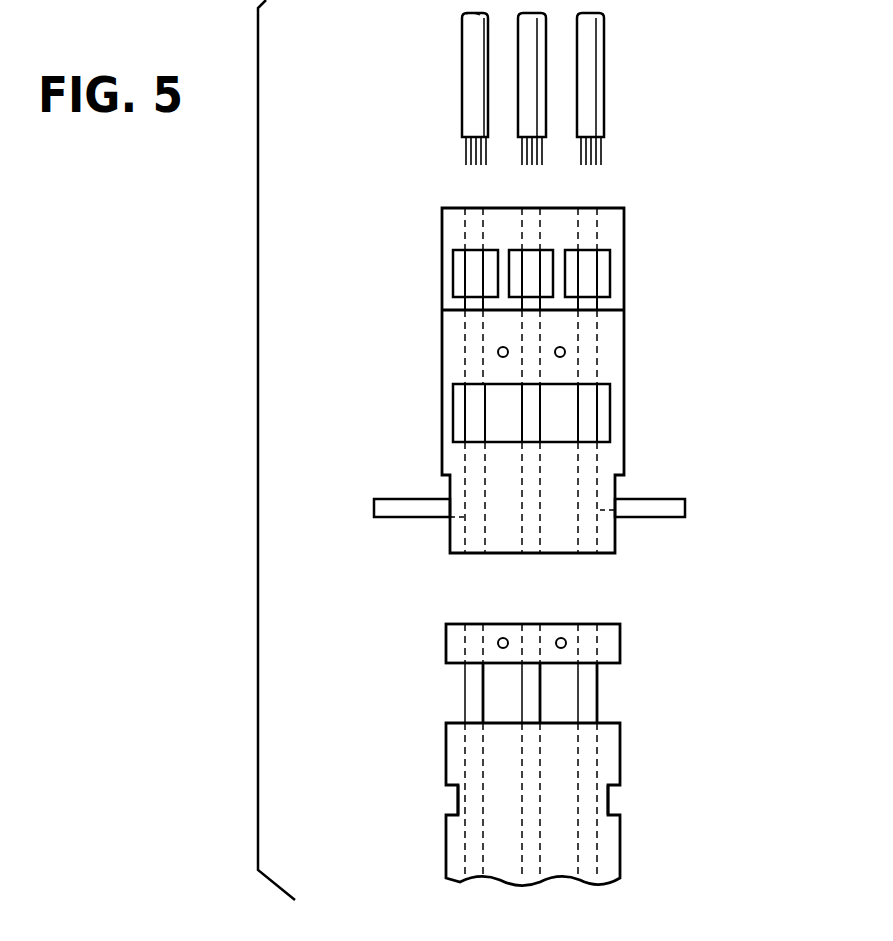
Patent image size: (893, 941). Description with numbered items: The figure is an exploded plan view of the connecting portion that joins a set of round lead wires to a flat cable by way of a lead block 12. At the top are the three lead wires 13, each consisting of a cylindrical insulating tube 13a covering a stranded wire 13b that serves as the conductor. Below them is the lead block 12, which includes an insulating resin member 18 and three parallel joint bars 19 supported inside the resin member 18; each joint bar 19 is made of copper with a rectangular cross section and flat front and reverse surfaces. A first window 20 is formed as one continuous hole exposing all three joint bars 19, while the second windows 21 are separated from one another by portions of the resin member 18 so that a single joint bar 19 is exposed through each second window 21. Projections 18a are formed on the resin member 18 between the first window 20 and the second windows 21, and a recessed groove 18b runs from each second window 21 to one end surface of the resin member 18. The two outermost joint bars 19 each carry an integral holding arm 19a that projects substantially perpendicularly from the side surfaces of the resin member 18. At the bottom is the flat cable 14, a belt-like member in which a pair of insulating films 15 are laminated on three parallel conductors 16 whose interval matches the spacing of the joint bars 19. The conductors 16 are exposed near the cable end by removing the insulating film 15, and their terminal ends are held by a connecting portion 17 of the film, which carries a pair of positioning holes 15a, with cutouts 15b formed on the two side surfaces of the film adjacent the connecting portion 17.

The lead block 12 is at (634, 236).
The lead wire 13 is at (606, 85).
The cylindrical insulating tube 13a is at (466, 77).
The stranded wire 13b is at (466, 149).
The flat cable 14 is at (626, 848).
The insulating film 15 is at (453, 860).
The positioning holes 15a is at (562, 640).
The cutouts 15b is at (456, 800).
The conductors 16 is at (470, 690).
The connecting portion 17 is at (455, 635).
The insulating resin member 18 is at (452, 344).
The projections 18a is at (566, 352).
The recessed groove 18b is at (470, 228).
The joint bars 19 is at (468, 410).
The holding arm 19a is at (410, 498).
The first window 20 is at (600, 413).
The second windows 21 is at (460, 282).